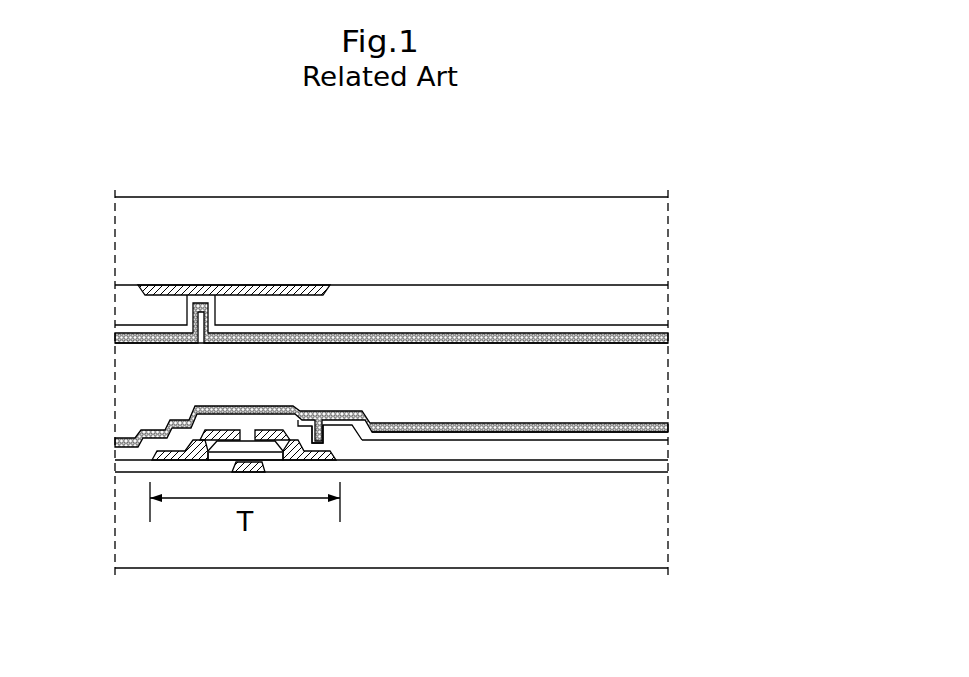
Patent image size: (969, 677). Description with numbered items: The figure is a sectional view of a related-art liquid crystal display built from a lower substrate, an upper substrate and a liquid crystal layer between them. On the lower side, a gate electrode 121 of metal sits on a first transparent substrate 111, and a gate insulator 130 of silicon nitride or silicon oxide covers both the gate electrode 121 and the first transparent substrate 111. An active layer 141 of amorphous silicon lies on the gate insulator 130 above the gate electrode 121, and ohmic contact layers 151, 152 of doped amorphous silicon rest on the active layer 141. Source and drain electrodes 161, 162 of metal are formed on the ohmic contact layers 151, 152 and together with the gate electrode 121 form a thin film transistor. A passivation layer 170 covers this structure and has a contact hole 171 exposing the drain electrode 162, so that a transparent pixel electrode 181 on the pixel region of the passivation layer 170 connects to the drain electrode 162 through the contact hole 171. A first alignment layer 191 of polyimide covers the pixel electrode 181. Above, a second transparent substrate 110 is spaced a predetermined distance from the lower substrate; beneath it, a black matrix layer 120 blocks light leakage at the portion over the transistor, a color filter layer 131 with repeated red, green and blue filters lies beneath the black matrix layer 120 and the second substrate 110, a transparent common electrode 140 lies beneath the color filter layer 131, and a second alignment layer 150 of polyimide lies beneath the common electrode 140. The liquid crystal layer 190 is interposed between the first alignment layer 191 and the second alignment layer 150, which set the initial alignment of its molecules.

The second transparent substrate 110 is at (311, 218).
The black matrix layer 120 is at (197, 285).
The color filter layer 131 is at (392, 301).
The common electrode 140 is at (497, 330).
The second alignment layer 150 is at (619, 335).
The liquid crystal layer 190 is at (652, 380).
The passivation layer 170 is at (163, 436).
The pixel electrode 181 is at (434, 437).
The first alignment layer 191 is at (592, 422).
The contact hole 171 is at (323, 431).
The gate insulator 130 is at (535, 472).
The first transparent substrate 111 is at (460, 555).
The gate electrode 121 is at (240, 473).
The active layer 141 is at (252, 448).
The ohmic contact layer 151 is at (210, 448).
The source electrode 161 is at (220, 437).
The drain electrode 162 is at (266, 432).
The ohmic contact layer 152 is at (274, 432).